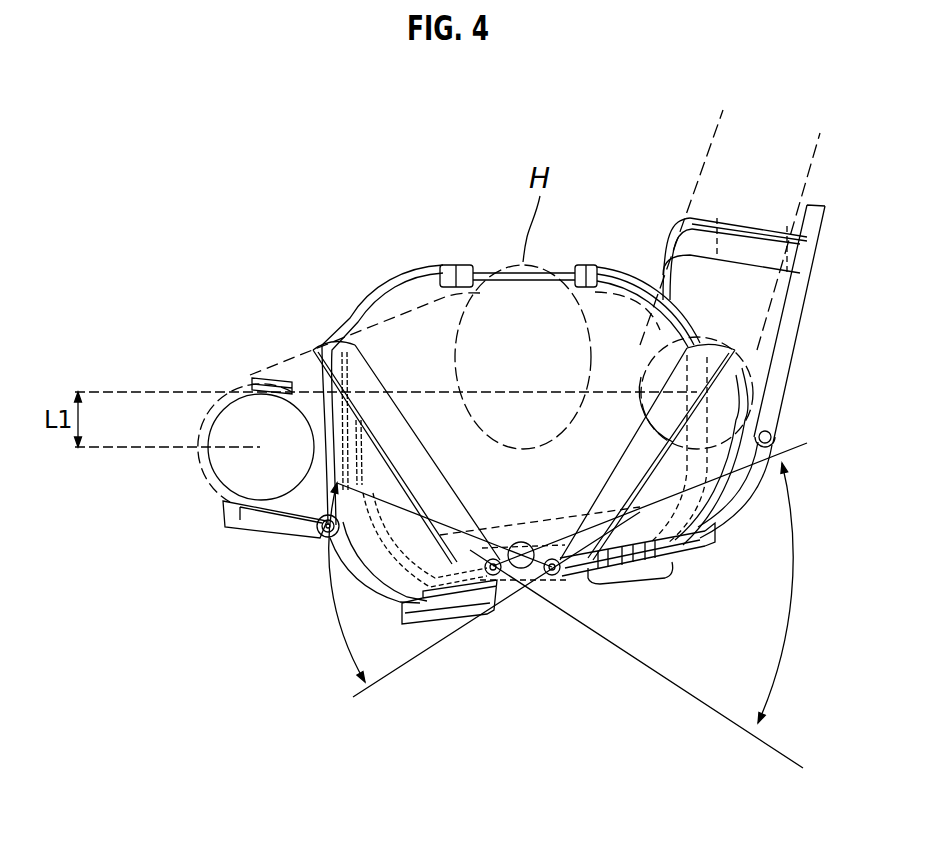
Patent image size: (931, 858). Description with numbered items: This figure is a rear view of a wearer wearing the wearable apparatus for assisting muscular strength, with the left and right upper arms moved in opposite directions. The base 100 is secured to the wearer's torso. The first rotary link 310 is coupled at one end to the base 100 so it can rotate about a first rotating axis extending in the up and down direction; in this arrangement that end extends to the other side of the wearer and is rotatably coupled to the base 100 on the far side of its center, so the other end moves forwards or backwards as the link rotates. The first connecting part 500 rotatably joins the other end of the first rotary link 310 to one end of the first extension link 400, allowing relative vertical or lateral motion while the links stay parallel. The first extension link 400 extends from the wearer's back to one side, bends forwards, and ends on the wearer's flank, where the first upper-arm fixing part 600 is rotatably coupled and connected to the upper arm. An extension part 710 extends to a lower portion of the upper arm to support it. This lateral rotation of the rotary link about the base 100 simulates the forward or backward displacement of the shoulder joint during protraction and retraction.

The base 100 is at (580, 570).
The first rotary link 310 is at (537, 572).
The first extension link 400 is at (377, 603).
The first connecting part 500 is at (503, 617).
The first upper-arm fixing part 600 is at (270, 522).
The extension part 710 is at (277, 384).